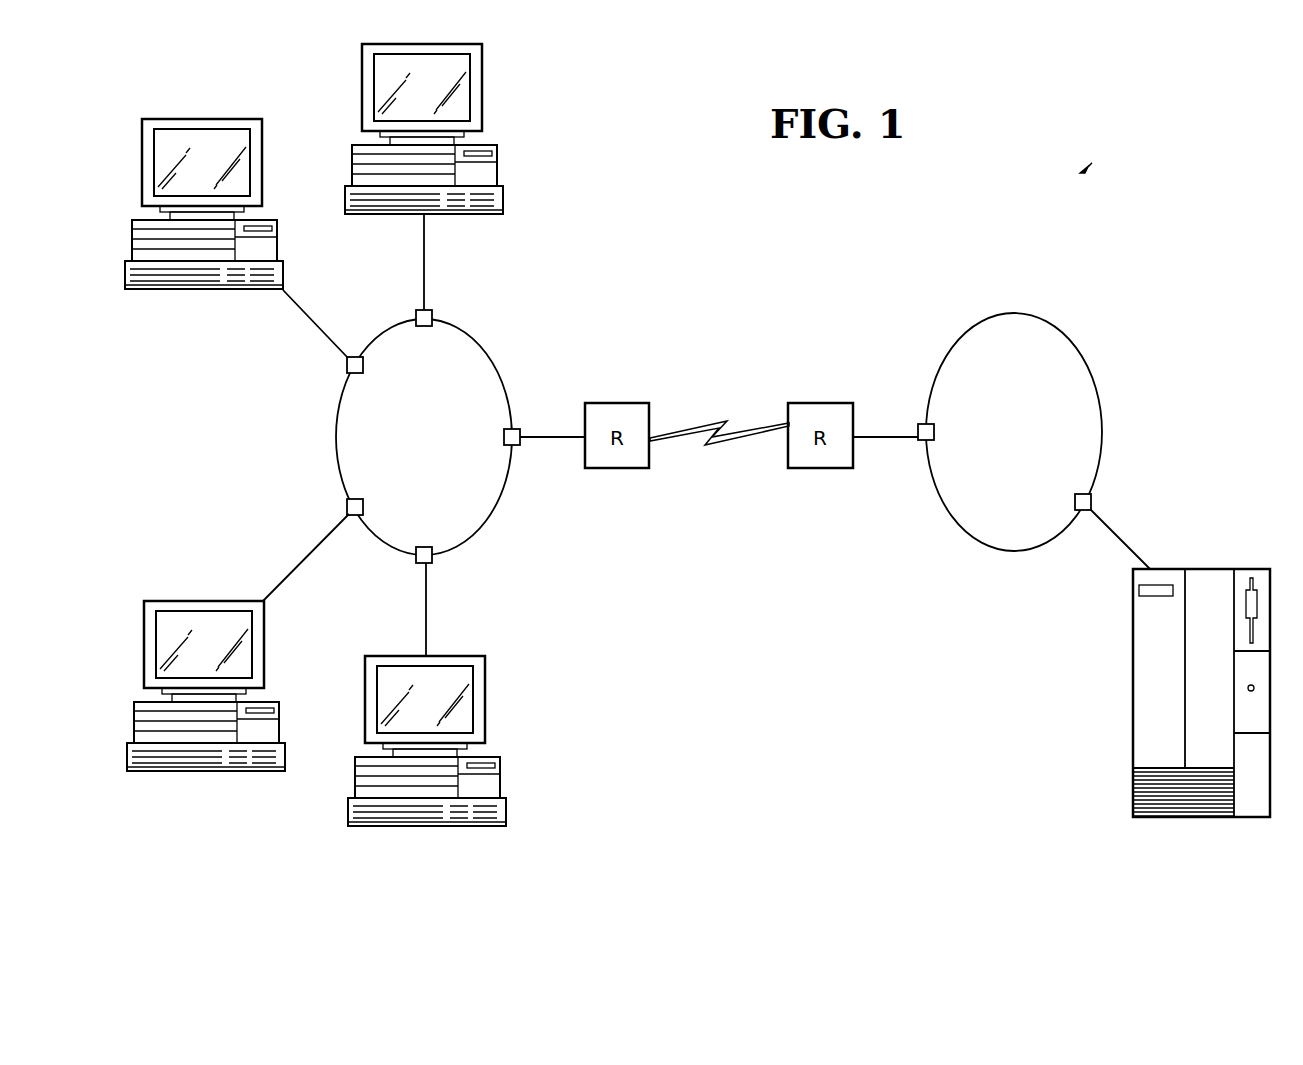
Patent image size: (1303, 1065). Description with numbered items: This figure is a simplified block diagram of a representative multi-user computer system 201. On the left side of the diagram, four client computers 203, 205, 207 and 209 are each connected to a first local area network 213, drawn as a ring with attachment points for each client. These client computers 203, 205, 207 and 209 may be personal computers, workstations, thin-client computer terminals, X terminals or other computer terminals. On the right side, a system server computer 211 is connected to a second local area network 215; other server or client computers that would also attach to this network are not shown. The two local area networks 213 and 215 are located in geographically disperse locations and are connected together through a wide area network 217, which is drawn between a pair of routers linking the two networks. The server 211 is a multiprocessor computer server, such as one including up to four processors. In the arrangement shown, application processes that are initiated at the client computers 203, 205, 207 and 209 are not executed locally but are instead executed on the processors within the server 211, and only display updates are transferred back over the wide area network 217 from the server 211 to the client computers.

The multi-user computer system 201 is at (1086, 167).
The client computer 203 is at (483, 88).
The client computer 205 is at (195, 118).
The client computer 207 is at (198, 601).
The client computer 209 is at (487, 697).
The system server computer 211 is at (1133, 683).
The first local area network 213 is at (335, 437).
The second local area network 215 is at (1081, 351).
The wide area network 217 is at (717, 420).